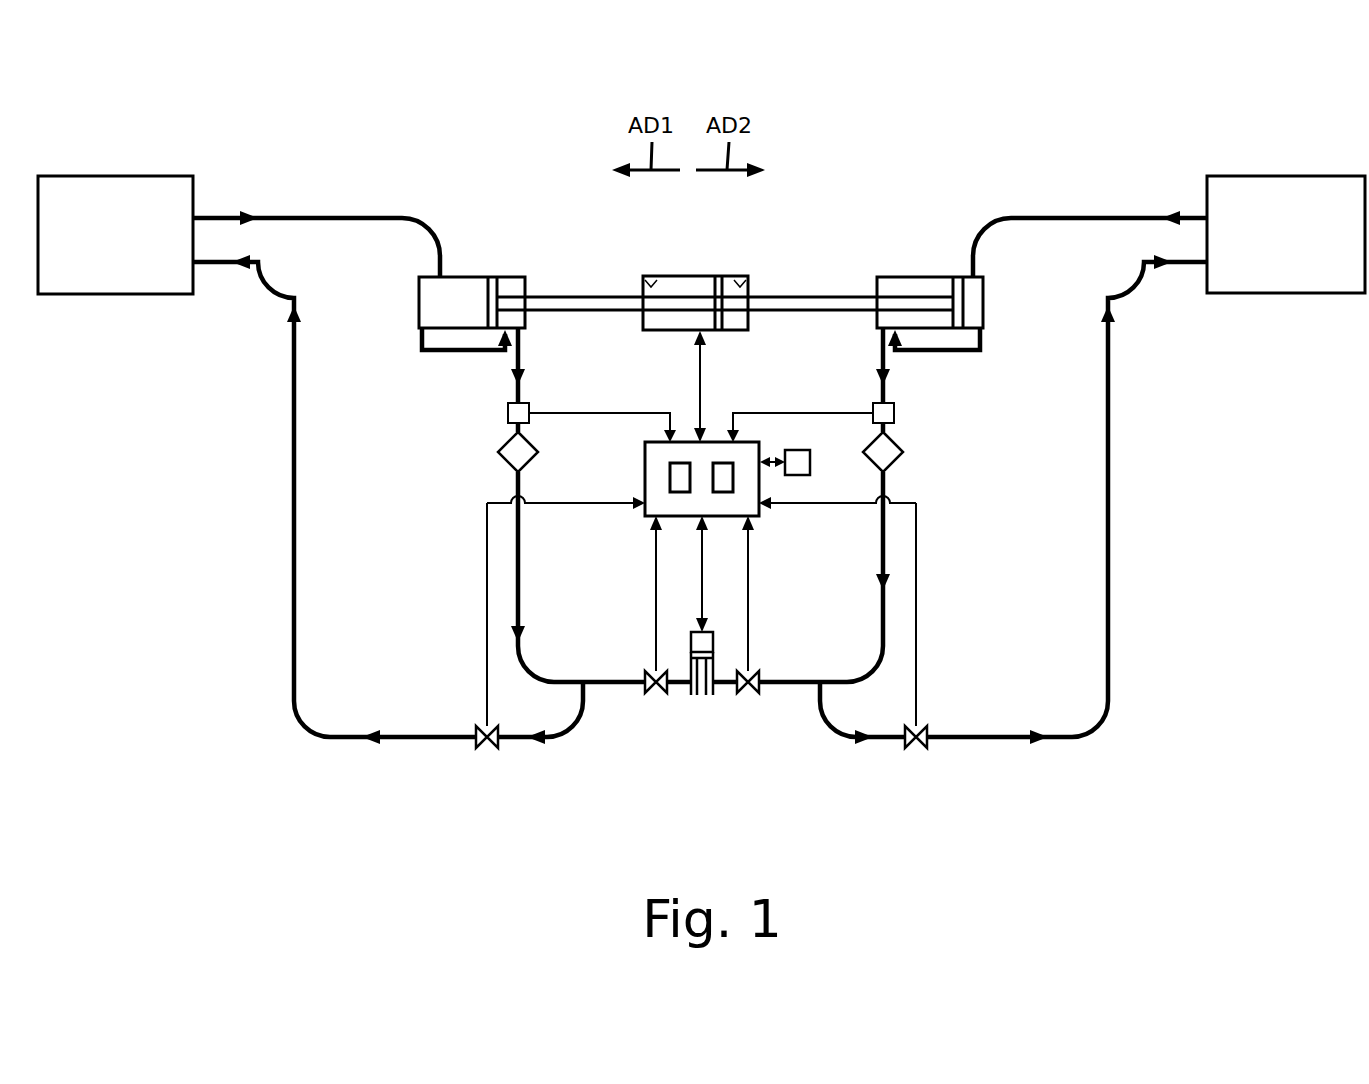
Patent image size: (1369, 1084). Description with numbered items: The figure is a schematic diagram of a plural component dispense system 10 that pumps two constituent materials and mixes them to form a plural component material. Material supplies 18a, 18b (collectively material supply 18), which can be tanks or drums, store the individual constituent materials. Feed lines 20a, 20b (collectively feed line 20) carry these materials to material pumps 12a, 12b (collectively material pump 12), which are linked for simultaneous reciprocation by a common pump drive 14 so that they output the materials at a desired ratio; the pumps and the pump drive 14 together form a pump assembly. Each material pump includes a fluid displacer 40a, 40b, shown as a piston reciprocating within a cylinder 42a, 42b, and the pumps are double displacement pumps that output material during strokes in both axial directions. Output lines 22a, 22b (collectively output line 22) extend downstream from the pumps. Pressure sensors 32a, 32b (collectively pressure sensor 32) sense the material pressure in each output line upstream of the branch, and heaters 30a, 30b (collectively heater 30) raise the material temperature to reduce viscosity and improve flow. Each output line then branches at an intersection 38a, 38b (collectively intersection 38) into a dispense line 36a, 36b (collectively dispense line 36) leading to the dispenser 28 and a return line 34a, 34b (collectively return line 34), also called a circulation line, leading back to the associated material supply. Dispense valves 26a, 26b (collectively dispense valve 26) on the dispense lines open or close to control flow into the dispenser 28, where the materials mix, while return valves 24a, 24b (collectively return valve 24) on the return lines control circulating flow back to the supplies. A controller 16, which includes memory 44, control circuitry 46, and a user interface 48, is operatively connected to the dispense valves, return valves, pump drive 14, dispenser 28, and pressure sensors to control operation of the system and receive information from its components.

The plural component dispense system 10 is at (560, 135).
The material pump 12 is at (690, 248).
The material pump 12a is at (461, 247).
The material pump 12b is at (912, 255).
The pump drive 14 is at (691, 260).
The controller 16 is at (702, 458).
The material supply 18 is at (1286, 191).
The material supply 18a is at (115, 235).
The material supply 18b is at (1286, 234).
The feed line 20 is at (1090, 207).
The feed line 20a is at (330, 212).
The feed line 20b is at (1078, 213).
The output line 22 is at (836, 577).
The output line 22a is at (535, 600).
The output line 22b is at (865, 634).
The return valve 24 is at (477, 733).
The return valve 24a is at (493, 760).
The return valve 24b is at (913, 760).
The dispense valve 26 is at (640, 665).
The dispense valve 26a is at (652, 705).
The dispense valve 26b is at (744, 705).
The dispenser 28 is at (720, 630).
The heater 30 is at (507, 436).
The heater 30a is at (503, 448).
The heater 30b is at (898, 450).
The pressure sensor 32 is at (546, 396).
The pressure sensor 32a is at (508, 407).
The pressure sensor 32b is at (896, 410).
The return line 34 is at (1067, 538).
The return line 34a is at (407, 745).
The return line 34b is at (996, 745).
The dispense line 36 is at (678, 696).
The dispense line 36a is at (642, 688).
The dispense line 36b is at (757, 690).
The intersection 38 is at (838, 694).
The intersection 38a is at (583, 680).
The intersection 38b is at (820, 682).
The fluid displacer 40a is at (492, 282).
The fluid displacer 40b is at (957, 290).
The cylinder 42a is at (418, 280).
The cylinder 42b is at (976, 275).
The memory 44 is at (680, 475).
The control circuitry 46 is at (718, 475).
The user interface 48 is at (800, 462).